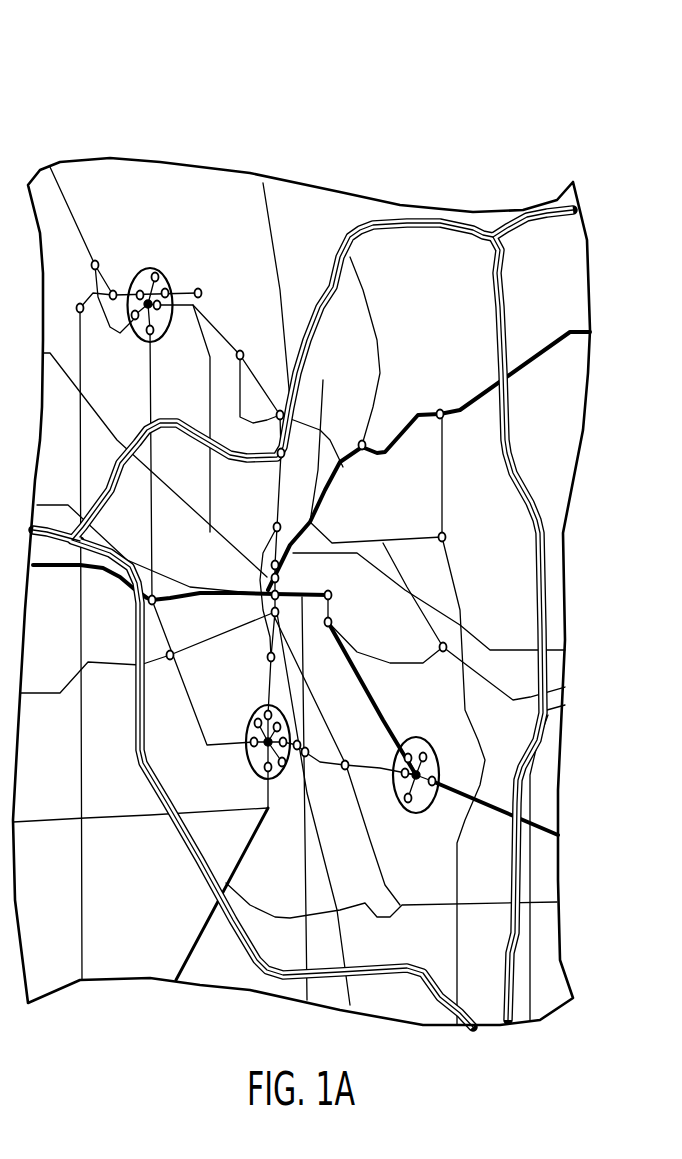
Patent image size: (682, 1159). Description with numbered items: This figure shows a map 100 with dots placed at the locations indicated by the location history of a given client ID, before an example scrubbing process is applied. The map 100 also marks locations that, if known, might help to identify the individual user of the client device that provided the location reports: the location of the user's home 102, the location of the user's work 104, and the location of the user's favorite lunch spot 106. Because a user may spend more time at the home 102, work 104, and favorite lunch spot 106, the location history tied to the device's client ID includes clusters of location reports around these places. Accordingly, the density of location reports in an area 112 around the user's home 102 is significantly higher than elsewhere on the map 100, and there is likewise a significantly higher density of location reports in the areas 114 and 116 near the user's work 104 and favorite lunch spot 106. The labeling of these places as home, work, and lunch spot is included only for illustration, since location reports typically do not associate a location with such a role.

The map 100 is at (70, 98).
The user's home 102 is at (146, 298).
The user's work 104 is at (266, 746).
The user's favorite lunch spot 106 is at (427, 737).
The area around the user's home 112 is at (167, 277).
The area near the user's work 114 is at (252, 723).
The area near the user's favorite lunch spot 116 is at (422, 813).